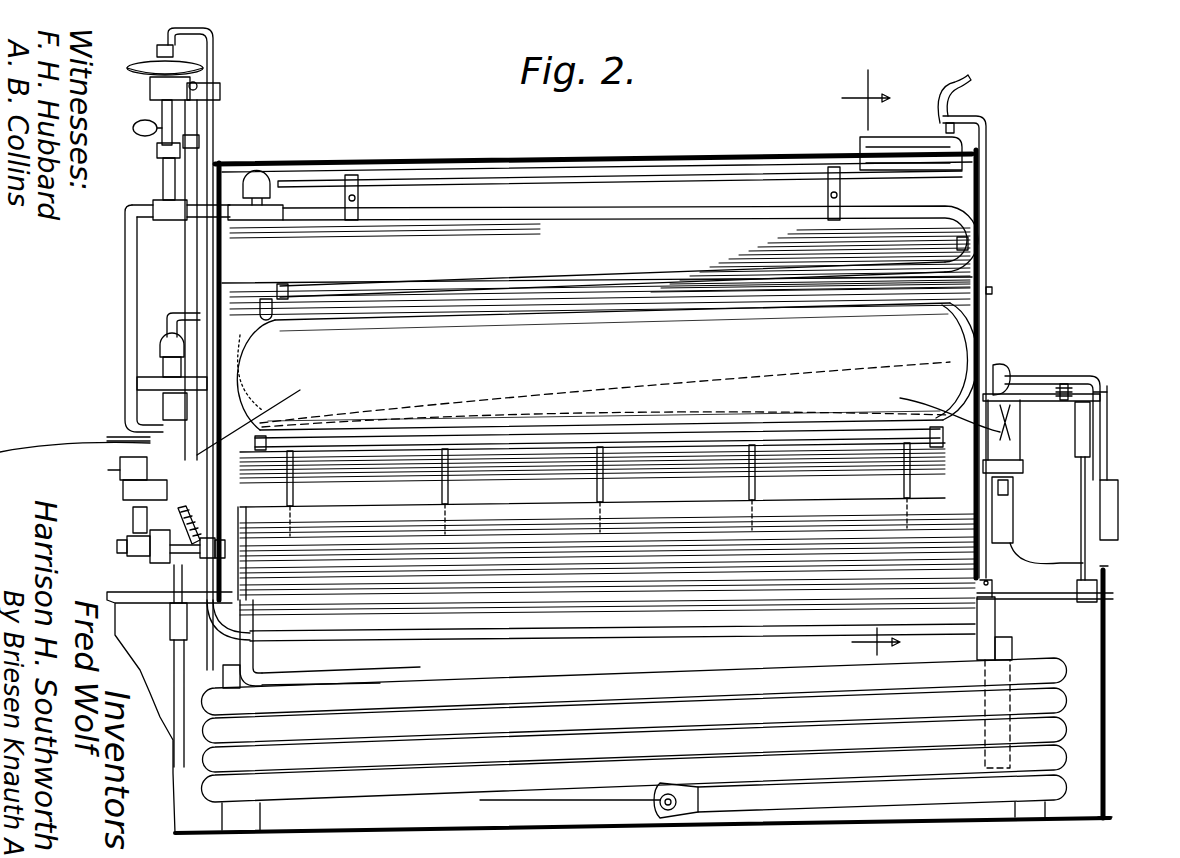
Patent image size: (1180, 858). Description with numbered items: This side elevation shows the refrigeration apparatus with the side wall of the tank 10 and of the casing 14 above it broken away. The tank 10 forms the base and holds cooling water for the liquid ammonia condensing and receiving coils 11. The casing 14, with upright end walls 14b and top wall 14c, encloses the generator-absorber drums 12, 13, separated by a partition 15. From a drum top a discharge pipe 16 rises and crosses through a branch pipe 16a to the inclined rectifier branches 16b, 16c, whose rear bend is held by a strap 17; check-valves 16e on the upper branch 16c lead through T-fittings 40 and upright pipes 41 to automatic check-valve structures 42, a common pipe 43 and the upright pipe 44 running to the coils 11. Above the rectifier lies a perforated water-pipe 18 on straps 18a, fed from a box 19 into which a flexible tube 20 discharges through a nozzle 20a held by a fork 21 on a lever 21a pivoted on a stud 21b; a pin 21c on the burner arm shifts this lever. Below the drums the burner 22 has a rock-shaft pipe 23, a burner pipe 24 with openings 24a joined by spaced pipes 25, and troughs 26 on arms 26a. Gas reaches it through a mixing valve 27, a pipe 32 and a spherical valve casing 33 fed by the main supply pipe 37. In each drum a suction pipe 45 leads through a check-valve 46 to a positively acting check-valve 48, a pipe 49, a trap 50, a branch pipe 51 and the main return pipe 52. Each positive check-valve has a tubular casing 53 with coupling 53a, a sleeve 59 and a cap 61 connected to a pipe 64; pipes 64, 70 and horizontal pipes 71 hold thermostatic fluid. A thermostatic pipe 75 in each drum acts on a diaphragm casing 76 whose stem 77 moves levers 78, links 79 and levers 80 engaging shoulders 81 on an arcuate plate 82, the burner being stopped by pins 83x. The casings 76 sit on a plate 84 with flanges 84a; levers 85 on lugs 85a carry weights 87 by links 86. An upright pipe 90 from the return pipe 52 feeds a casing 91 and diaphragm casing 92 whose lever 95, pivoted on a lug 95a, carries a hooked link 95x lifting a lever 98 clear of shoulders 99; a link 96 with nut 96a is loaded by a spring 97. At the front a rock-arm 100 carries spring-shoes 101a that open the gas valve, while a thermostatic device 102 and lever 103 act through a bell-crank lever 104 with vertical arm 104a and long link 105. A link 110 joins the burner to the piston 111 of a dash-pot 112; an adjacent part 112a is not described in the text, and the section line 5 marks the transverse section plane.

The tank 10 is at (1106, 676).
The liquid ammonia condensing and receiving coils 11 is at (555, 678).
The drum 12 is at (607, 366).
The drum 13 is at (125, 284).
The metal casing 14 is at (340, 160).
The front and rear walls 14b is at (224, 281).
The top wall 14c is at (505, 158).
The partition 15 is at (489, 252).
The pipe 16 is at (258, 303).
The upwardly inclined branch pipe 16a is at (980, 227).
The upwardly and rearwardly inclined branch 16b is at (412, 282).
The forwardly and upwardly inclined branch pipe 16c is at (605, 222).
The check-valves 16e is at (260, 180).
The loop or strap 17 is at (970, 244).
The water-pipe 18 is at (722, 178).
The straps 18a is at (360, 196).
The box 19 is at (892, 132).
The flexible pipe or tube 20 is at (972, 80).
The nozzle 20a is at (958, 120).
The fork 21 is at (940, 114).
The lever 21a is at (987, 178).
The stud 21b is at (993, 291).
The pin 21c is at (1066, 565).
The burner 22 is at (529, 489).
The rock-shaft pipe 23 is at (1036, 542).
The burner pipe 24 is at (618, 540).
The burner openings 24a is at (745, 435).
The pipes 25 is at (296, 492).
The troughs 26 is at (392, 518).
The arms 26a is at (242, 540).
The adjustable mixing valve 27 is at (162, 566).
The pipe 32 is at (133, 521).
The valve casing 33 is at (116, 470).
The main fuel gas supply pipe 37 is at (108, 439).
The T-fittings 40 is at (172, 220).
The upright pipes 41 is at (163, 181).
The positively operating automatic check-valve structures 42 is at (160, 112).
The common pipe 43 is at (133, 128).
The upright pipe 44 is at (175, 159).
The perforated suction pipe 45 is at (605, 403).
The check-valve 46 is at (160, 355).
The positively acting automatic check-valve structure 48 is at (155, 412).
The pipe 49 is at (205, 618).
The trap 50 is at (356, 642).
The branch pipe 51 is at (1040, 600).
The main return pipe 52 is at (1114, 596).
The tubular casing 53 is at (200, 125).
The coupling 53a is at (200, 142).
The sleeve 59 is at (150, 88).
The annular cap 61 is at (222, 375).
The pipe 64 is at (213, 30).
The pipe 70 is at (212, 53).
The horizontal pipes 71 is at (962, 395).
The pipe 75 is at (740, 378).
The casing 76 is at (1036, 392).
The stem 77 is at (950, 368).
The horizontal levers 78 is at (1022, 430).
The links 79 is at (1023, 447).
The levers 80 is at (1024, 466).
The radial shoulders 81 is at (1014, 506).
The arcuate plate 82 is at (1014, 520).
The stops or pins 83x is at (1014, 550).
The horizontal plate 84 is at (1076, 400).
The flanges 84a is at (1062, 380).
The levers 85 is at (1072, 375).
The lugs 85a is at (1000, 365).
The links 86 is at (1108, 458).
The weights 87 is at (1119, 495).
The upright pipe 90 is at (1088, 472).
The casing 91 is at (1108, 405).
The diaphragm casing 92 is at (1105, 378).
The horizontal lever 95 is at (1108, 385).
The lug 95a is at (1108, 400).
The hooked link 95x is at (936, 405).
The link 96 is at (1095, 375).
The nut 96a is at (1105, 400).
The coiled spring 97 is at (1092, 420).
The lever 98 is at (1015, 480).
The shoulders 99 is at (1012, 492).
The rock-arm 100 is at (184, 506).
The spring-shoes 101a is at (130, 497).
The thermostatic device 102 is at (220, 88).
The lever 103 is at (197, 83).
The bell-crank lever 104 is at (266, 415).
The vertical arm 104a is at (75, 444).
The long link 105 is at (205, 100).
The link 110 is at (996, 630).
The piston 111 is at (1013, 652).
The dash-pot 112 is at (1003, 642).
The rod end 112a is at (977, 620).
The section line 5 is at (879, 362).